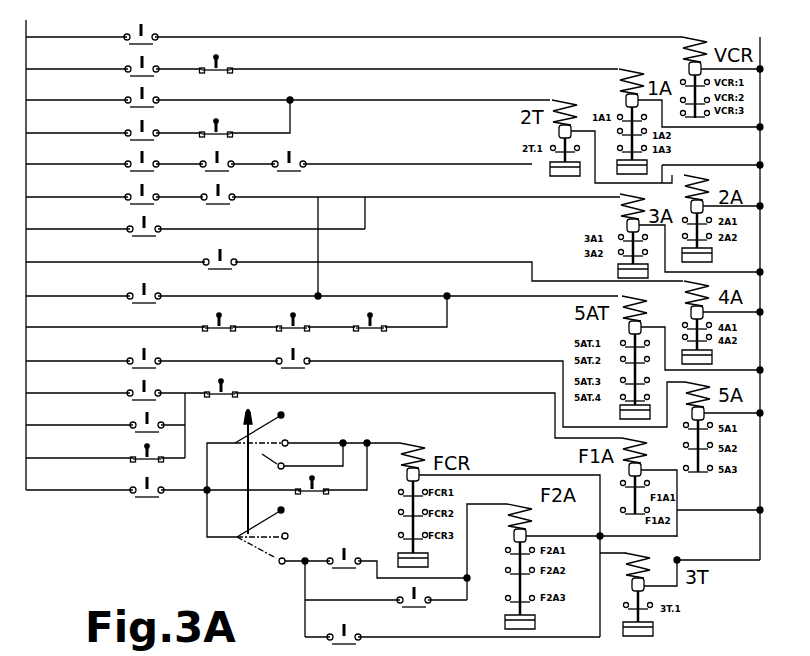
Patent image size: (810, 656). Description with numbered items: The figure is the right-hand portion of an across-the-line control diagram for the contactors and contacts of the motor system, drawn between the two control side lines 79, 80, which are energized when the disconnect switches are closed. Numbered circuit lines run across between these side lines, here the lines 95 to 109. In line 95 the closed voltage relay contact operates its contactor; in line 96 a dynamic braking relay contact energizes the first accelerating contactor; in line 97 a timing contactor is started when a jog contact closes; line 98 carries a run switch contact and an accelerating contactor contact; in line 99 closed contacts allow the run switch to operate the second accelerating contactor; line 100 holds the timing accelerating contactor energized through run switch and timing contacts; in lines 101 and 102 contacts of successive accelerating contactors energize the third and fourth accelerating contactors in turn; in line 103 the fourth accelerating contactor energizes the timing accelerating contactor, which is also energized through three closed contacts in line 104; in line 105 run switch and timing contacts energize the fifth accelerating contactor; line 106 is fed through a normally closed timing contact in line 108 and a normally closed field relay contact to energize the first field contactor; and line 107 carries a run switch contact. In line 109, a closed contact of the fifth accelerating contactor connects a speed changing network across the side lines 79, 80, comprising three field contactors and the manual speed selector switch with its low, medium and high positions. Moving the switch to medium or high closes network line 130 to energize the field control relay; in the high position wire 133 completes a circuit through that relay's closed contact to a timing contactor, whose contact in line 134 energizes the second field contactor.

The control means side line 79 is at (32, 20).
The control means side line 80 is at (760, 53).
The circuit line 95 is at (354, 29).
The circuit line 96 is at (49, 66).
The circuit line 97 is at (49, 97).
The circuit line 98 is at (49, 130).
The circuit line 99 is at (49, 161).
The circuit line 100 is at (49, 194).
The circuit line 101 is at (49, 226).
The circuit line 102 is at (49, 259).
The circuit line 103 is at (49, 293).
The circuit line 104 is at (49, 324).
The circuit line 105 is at (49, 358).
The circuit line 106 is at (49, 390).
The circuit line 107 is at (49, 422).
The circuit line 108 is at (49, 455).
The circuit line 109 is at (49, 487).
The network line 130 is at (235, 443).
The wire 133 is at (302, 613).
The network line 134 is at (476, 574).